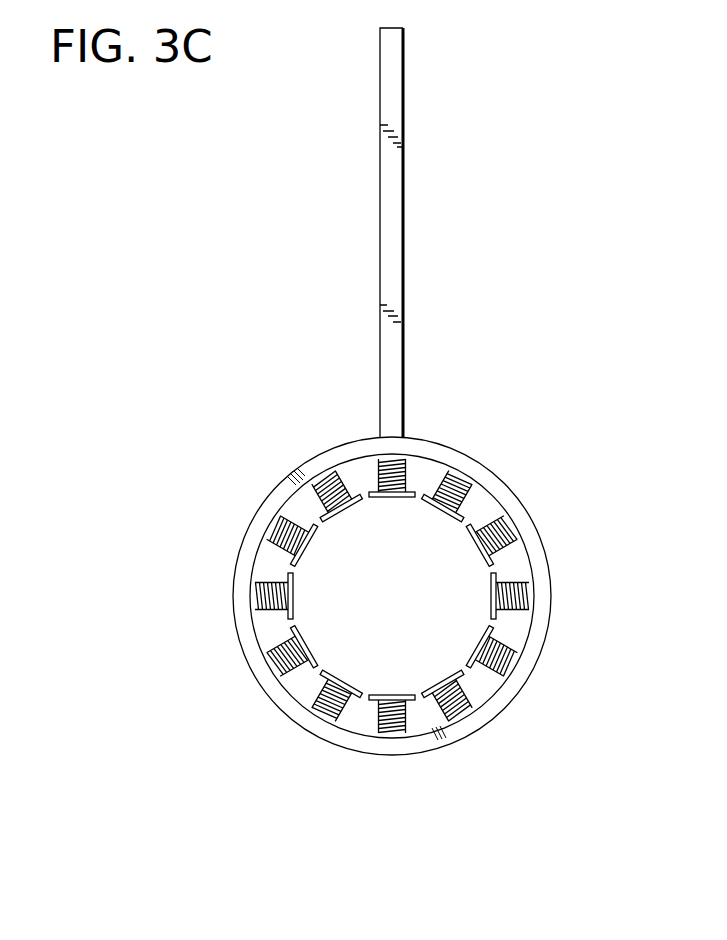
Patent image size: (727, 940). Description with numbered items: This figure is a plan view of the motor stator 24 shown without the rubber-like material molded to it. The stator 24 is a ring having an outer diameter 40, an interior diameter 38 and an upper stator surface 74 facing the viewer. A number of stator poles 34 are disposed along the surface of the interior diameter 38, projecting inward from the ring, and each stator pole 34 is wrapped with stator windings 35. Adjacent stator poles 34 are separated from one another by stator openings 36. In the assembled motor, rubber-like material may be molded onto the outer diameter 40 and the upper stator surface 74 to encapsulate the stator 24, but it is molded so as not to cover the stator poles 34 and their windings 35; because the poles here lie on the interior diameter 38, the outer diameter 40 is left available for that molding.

The stator 24 is at (560, 462).
The stator poles 34 is at (420, 497).
The stator windings 35 is at (462, 498).
The stator openings 36 is at (466, 663).
The interior diameter 38 is at (344, 511).
The outer diameter 40 is at (290, 719).
The upper stator surface 74 is at (252, 533).